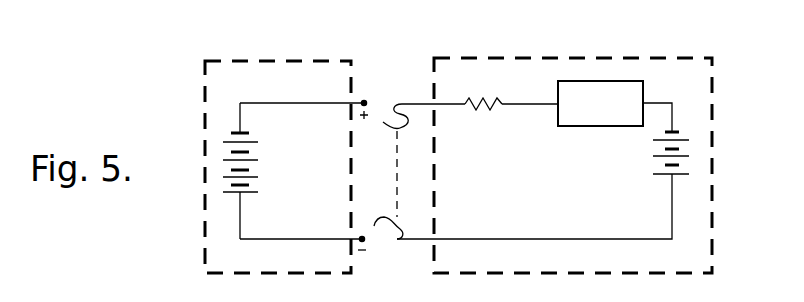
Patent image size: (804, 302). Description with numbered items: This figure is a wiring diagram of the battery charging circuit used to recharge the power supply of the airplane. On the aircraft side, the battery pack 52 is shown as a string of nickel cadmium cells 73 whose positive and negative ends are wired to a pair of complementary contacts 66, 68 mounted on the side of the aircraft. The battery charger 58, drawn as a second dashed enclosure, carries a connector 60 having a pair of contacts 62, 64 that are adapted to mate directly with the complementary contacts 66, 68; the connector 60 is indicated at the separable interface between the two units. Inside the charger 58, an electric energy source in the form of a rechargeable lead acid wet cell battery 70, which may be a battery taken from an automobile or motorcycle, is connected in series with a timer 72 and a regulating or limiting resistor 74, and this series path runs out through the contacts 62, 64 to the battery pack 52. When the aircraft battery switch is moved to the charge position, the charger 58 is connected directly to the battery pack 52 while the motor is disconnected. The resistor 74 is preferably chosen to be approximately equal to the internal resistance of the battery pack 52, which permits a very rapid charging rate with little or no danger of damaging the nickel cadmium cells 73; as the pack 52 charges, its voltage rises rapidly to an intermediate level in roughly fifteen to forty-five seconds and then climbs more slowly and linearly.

The battery pack 52 is at (205, 63).
The battery charger 58 is at (712, 58).
The connector 60 is at (399, 171).
The contact 62 is at (380, 118).
The contact 64 is at (373, 227).
The complementary contact 66 is at (365, 102).
The complementary contact 68 is at (361, 239).
The lead acid wet cell battery 70 is at (682, 173).
The timer 72 is at (600, 125).
The nickel cadmium cell 73 is at (254, 158).
The limiting resistor 74 is at (497, 88).